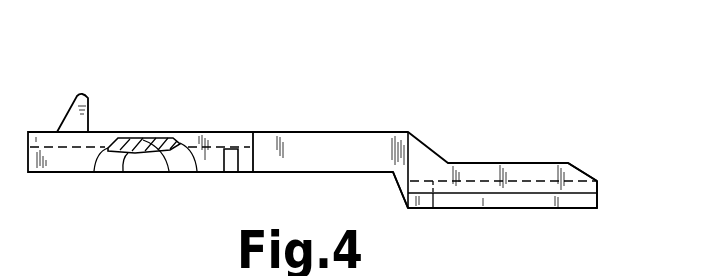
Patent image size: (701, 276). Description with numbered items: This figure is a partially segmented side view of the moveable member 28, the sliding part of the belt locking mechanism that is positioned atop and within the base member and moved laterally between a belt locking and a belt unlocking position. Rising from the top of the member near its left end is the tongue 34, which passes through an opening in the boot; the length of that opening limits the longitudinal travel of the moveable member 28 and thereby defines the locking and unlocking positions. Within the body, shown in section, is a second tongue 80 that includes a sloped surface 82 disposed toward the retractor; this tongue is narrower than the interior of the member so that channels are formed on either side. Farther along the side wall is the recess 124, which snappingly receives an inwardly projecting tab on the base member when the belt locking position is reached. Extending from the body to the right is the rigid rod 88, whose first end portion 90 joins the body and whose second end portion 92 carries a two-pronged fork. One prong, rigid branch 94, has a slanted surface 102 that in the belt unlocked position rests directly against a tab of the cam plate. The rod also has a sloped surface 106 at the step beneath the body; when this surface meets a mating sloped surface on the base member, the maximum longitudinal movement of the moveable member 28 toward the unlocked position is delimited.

The moveable member 28 is at (212, 82).
The tongue 34 is at (74, 103).
The tongue 80 is at (124, 171).
The sloped surface 82 is at (169, 171).
The rigid rod 88 is at (370, 143).
The first end portion 90 is at (258, 126).
The second end portion 92 is at (600, 181).
The rigid branch 94 is at (541, 209).
The slanted surface 102 is at (590, 175).
The sloped surface 106 is at (398, 186).
The recess 124 is at (233, 171).